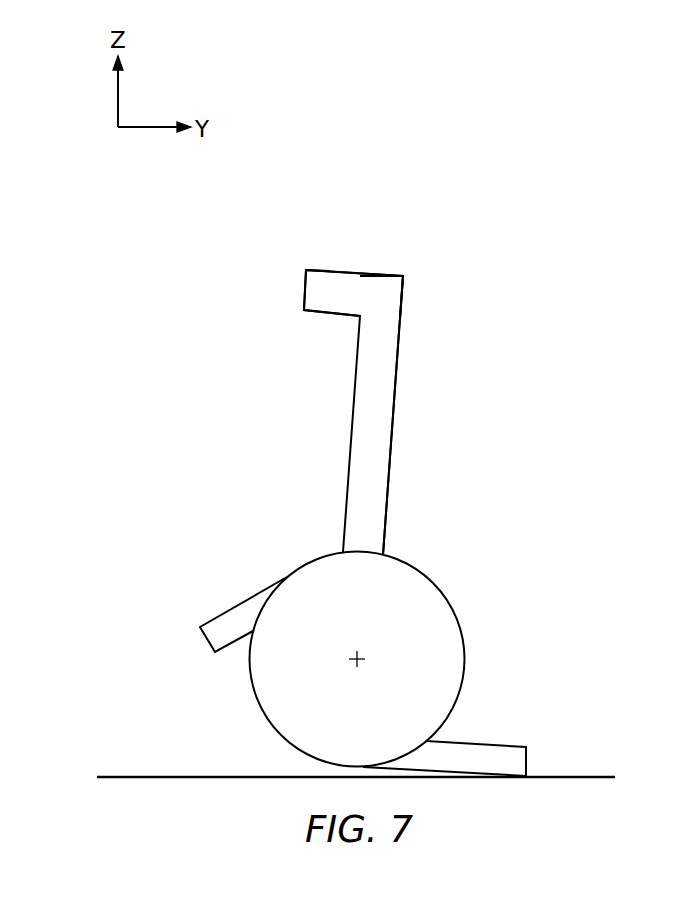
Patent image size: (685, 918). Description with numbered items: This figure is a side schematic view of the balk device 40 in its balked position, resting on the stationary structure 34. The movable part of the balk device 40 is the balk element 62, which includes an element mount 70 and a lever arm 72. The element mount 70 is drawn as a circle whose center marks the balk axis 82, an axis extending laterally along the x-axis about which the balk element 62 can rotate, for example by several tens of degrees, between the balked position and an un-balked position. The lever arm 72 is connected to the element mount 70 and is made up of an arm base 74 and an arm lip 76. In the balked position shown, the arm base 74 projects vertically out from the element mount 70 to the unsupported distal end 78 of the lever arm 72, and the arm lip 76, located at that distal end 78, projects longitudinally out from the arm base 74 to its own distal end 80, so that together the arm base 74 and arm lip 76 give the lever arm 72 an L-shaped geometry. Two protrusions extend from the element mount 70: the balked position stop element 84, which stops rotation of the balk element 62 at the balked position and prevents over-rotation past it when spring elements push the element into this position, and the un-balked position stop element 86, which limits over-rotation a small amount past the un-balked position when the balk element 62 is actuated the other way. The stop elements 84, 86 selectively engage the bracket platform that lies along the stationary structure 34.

The stationary structure 34 is at (580, 775).
The balk device 40 is at (419, 486).
The balk element 62 is at (419, 486).
The element mount 70 is at (448, 600).
The lever arm 72 is at (411, 351).
The arm base 74 is at (390, 465).
The arm lip 76 is at (338, 270).
The distal end of lever arm 78 is at (384, 273).
The distal end of arm lip 80 is at (305, 288).
The balk axis 82 is at (358, 660).
The balked position stop element 84 is at (482, 742).
The un-balked position stop element 86 is at (242, 598).